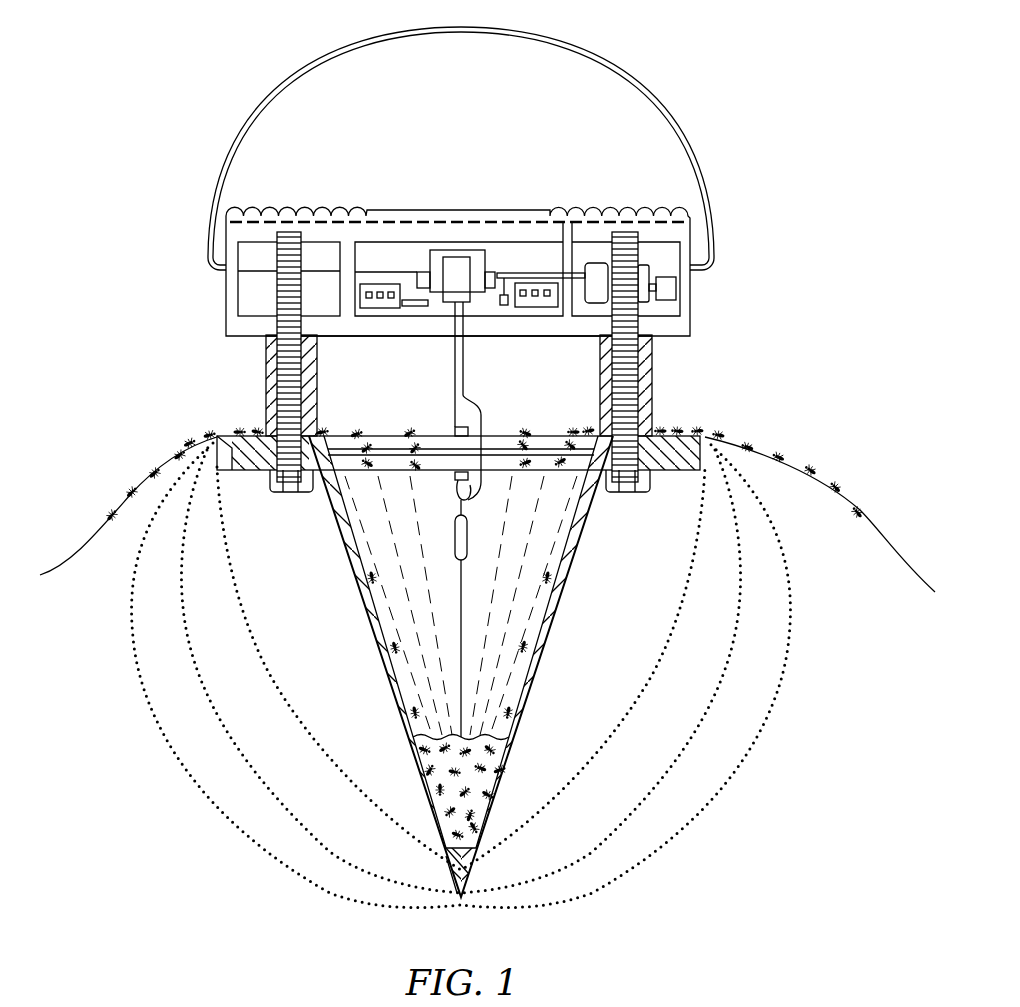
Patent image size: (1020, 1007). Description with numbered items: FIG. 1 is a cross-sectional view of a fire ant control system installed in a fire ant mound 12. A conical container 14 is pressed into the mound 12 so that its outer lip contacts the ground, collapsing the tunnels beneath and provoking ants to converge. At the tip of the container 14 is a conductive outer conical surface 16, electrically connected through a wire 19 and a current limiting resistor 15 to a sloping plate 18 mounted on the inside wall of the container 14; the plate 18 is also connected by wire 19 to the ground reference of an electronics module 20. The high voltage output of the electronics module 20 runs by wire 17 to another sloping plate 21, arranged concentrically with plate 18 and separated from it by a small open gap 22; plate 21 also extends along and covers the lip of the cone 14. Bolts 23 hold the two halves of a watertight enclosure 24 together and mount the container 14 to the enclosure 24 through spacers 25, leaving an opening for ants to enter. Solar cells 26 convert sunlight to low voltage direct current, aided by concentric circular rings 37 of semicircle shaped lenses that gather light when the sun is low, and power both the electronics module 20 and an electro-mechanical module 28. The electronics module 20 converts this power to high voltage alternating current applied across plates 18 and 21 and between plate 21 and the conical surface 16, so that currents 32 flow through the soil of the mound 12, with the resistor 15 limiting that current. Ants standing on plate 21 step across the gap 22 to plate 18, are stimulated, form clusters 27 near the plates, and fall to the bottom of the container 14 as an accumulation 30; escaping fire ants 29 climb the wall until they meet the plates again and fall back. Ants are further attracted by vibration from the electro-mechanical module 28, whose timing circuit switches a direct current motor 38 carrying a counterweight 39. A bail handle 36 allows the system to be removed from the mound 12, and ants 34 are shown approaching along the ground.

The fire ant mound 12 is at (102, 537).
The conical container 14 is at (564, 592).
The current limiting resistor 15 is at (468, 532).
The conductive outer conical surface 16 is at (462, 898).
The wire 17 is at (453, 350).
The sloping plate 18 is at (433, 472).
The wire 19 is at (466, 345).
The electronics module 20 is at (405, 248).
The sloping plate 21 is at (215, 432).
The open gap 22 is at (497, 455).
The bolts 23 is at (278, 372).
The watertight enclosure 24 is at (226, 307).
The spacers 25 is at (262, 344).
The solar cells 26 is at (248, 218).
The clusters 27 is at (413, 432).
The electro-mechanical module 28 is at (670, 252).
The fire ants 29 is at (374, 579).
The accumulation 30 is at (485, 765).
The currents 32 is at (227, 570).
The ants on ground 34 is at (197, 440).
The bail handle 36 is at (607, 72).
The concentric circular rings 37 is at (340, 207).
The direct current motor 38 is at (602, 298).
The counterweight 39 is at (677, 289).